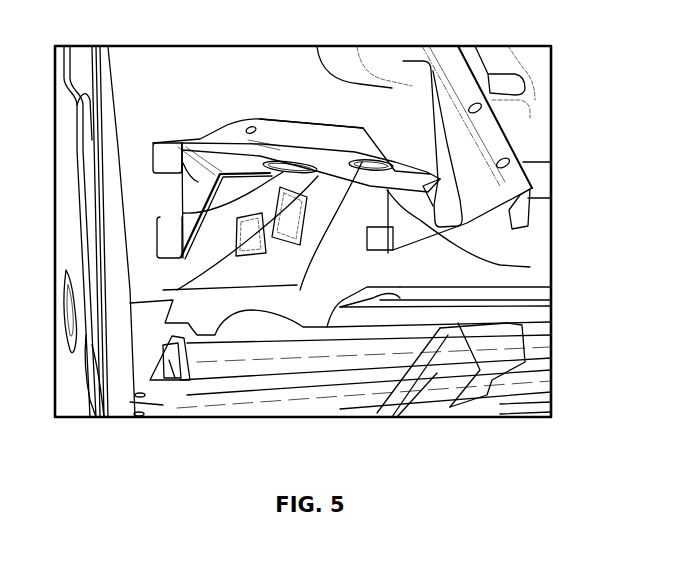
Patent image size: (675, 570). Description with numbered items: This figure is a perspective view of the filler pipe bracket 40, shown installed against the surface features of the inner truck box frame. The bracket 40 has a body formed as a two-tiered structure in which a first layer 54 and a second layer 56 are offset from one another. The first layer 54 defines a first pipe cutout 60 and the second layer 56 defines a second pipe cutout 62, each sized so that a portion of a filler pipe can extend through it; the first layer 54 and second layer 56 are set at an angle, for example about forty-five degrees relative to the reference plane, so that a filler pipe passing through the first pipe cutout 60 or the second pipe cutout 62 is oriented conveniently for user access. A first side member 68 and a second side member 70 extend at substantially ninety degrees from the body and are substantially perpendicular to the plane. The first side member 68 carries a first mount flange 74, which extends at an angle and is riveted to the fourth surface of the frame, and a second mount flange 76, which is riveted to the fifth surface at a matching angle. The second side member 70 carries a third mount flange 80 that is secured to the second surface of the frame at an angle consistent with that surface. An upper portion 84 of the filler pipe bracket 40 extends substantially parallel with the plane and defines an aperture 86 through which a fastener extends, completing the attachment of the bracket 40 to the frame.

The filler pipe bracket 40 is at (206, 130).
The first layer 54 is at (436, 180).
The second layer 56 is at (223, 150).
The first pipe cutout 60 is at (300, 290).
The second pipe cutout 62 is at (177, 290).
The first side member 68 is at (180, 146).
The second side member 70 is at (530, 267).
The first mount flange 74 is at (167, 220).
The second mount flange 76 is at (167, 145).
The third mount flange 80 is at (368, 287).
The upper portion 84 is at (287, 132).
The aperture 86 is at (250, 127).